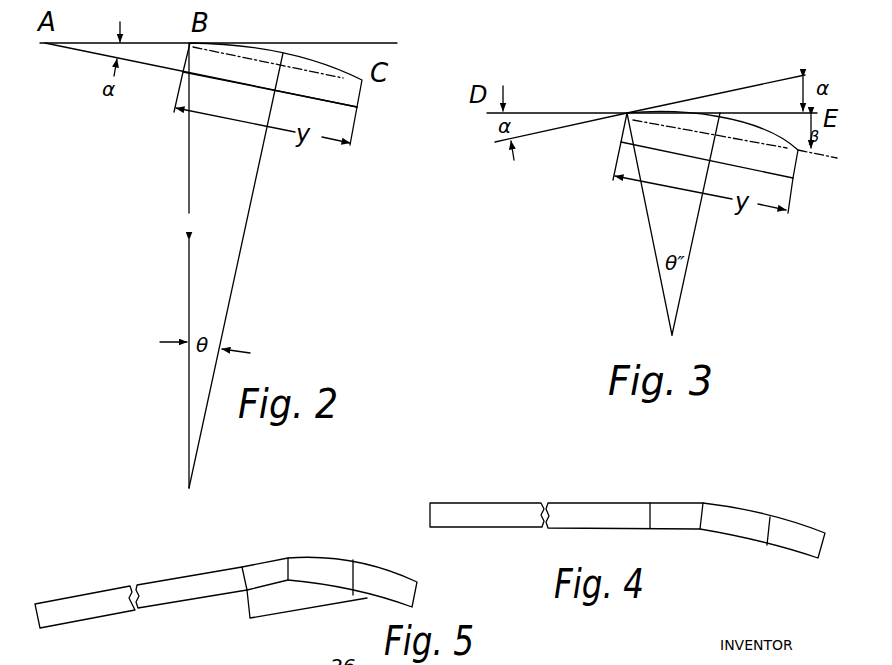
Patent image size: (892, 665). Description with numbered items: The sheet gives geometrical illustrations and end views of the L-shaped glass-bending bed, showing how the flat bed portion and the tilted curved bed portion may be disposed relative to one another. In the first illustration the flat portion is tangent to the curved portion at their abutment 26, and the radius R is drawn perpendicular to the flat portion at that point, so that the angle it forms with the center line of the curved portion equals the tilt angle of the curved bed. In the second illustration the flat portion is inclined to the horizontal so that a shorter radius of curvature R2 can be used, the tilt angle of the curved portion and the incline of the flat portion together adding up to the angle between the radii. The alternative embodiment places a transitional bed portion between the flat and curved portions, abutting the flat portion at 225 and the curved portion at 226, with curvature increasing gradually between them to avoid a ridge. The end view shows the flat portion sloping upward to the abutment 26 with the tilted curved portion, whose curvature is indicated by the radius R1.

In FIG. 4, the abutment 225 is at (652, 502).
In FIG. 4, the abutment 226 is at (714, 489).
In FIG. 5, the abutment 26 is at (289, 557).
In FIG. 2, the radius R is at (184, 229).
In FIG. 4, the radius R is at (765, 530).
In FIG. 5, the radius of curvature R1 is at (354, 568).
In FIG. 3, the radius of curvature R2 is at (650, 235).